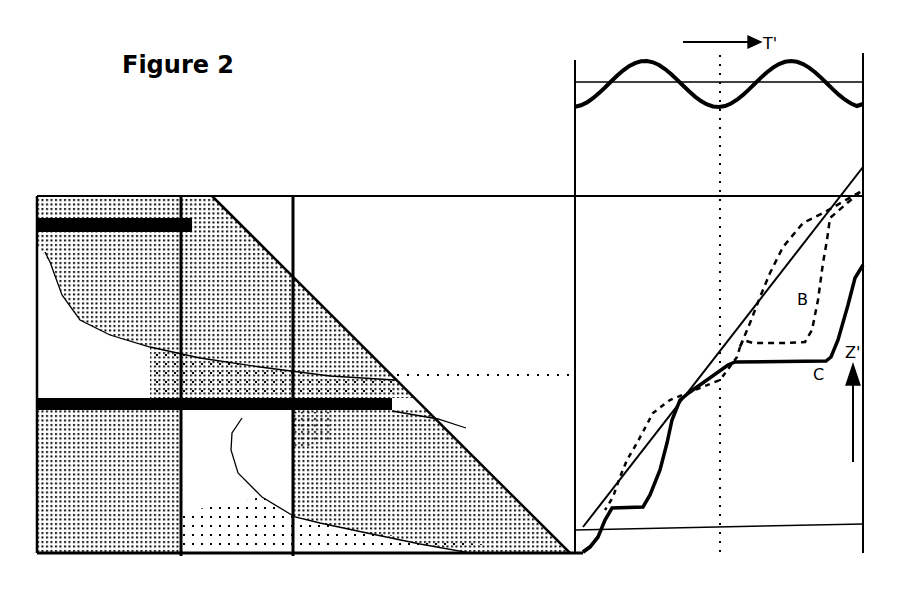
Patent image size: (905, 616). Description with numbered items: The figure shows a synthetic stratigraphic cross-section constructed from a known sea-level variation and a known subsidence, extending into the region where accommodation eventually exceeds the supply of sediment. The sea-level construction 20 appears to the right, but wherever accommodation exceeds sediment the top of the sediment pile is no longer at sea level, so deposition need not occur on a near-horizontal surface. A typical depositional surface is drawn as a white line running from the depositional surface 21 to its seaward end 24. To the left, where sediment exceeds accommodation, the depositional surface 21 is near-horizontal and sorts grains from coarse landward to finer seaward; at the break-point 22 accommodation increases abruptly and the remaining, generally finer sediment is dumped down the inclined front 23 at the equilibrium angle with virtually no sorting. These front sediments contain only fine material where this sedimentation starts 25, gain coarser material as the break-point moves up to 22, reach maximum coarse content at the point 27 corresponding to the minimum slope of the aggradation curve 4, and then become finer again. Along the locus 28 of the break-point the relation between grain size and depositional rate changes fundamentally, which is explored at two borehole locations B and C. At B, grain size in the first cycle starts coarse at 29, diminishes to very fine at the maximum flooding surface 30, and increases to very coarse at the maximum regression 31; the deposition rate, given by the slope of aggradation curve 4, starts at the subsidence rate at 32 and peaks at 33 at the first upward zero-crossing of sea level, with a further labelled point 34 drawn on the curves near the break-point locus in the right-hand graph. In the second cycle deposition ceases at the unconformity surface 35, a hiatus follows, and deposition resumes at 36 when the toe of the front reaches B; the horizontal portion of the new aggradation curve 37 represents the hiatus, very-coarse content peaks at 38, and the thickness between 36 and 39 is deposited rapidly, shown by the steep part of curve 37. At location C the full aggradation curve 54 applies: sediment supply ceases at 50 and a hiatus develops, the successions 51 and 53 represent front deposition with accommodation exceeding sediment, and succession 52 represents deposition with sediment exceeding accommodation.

The sea-level construction 20 is at (770, 528).
The depositional surface 21 is at (109, 482).
The break-point 22 is at (248, 420).
The inclined front 23 is at (322, 482).
The depositional surface end 24 is at (363, 533).
The start of front sedimentation 25 is at (252, 488).
The maximum coarse material point 27 is at (442, 424).
The locus of the break-point 28 is at (404, 390).
The coarse grain start 29 is at (183, 557).
The maximum flooding surface 30 is at (178, 473).
The maximum regression point 31 is at (175, 412).
The start of aggradation curve 32 is at (592, 546).
The maximum deposition rate 33 is at (618, 478).
The straight line 34 is at (688, 395).
The unconformity surface 35 is at (88, 318).
The deposition resumption point 36 is at (237, 317).
The new aggradation curve 37 is at (800, 340).
The maximum very-coarse content point 38 is at (180, 258).
The top of front sediment thickness 39 is at (307, 222).
The aggradation curve 4 is at (693, 419).
The sediment supply cessation point 50 is at (296, 517).
The front deposition succession 51 is at (296, 438).
The succession 52 is at (293, 372).
The front deposition succession 53 is at (305, 303).
The aggradation curve for location C 54 is at (664, 458).